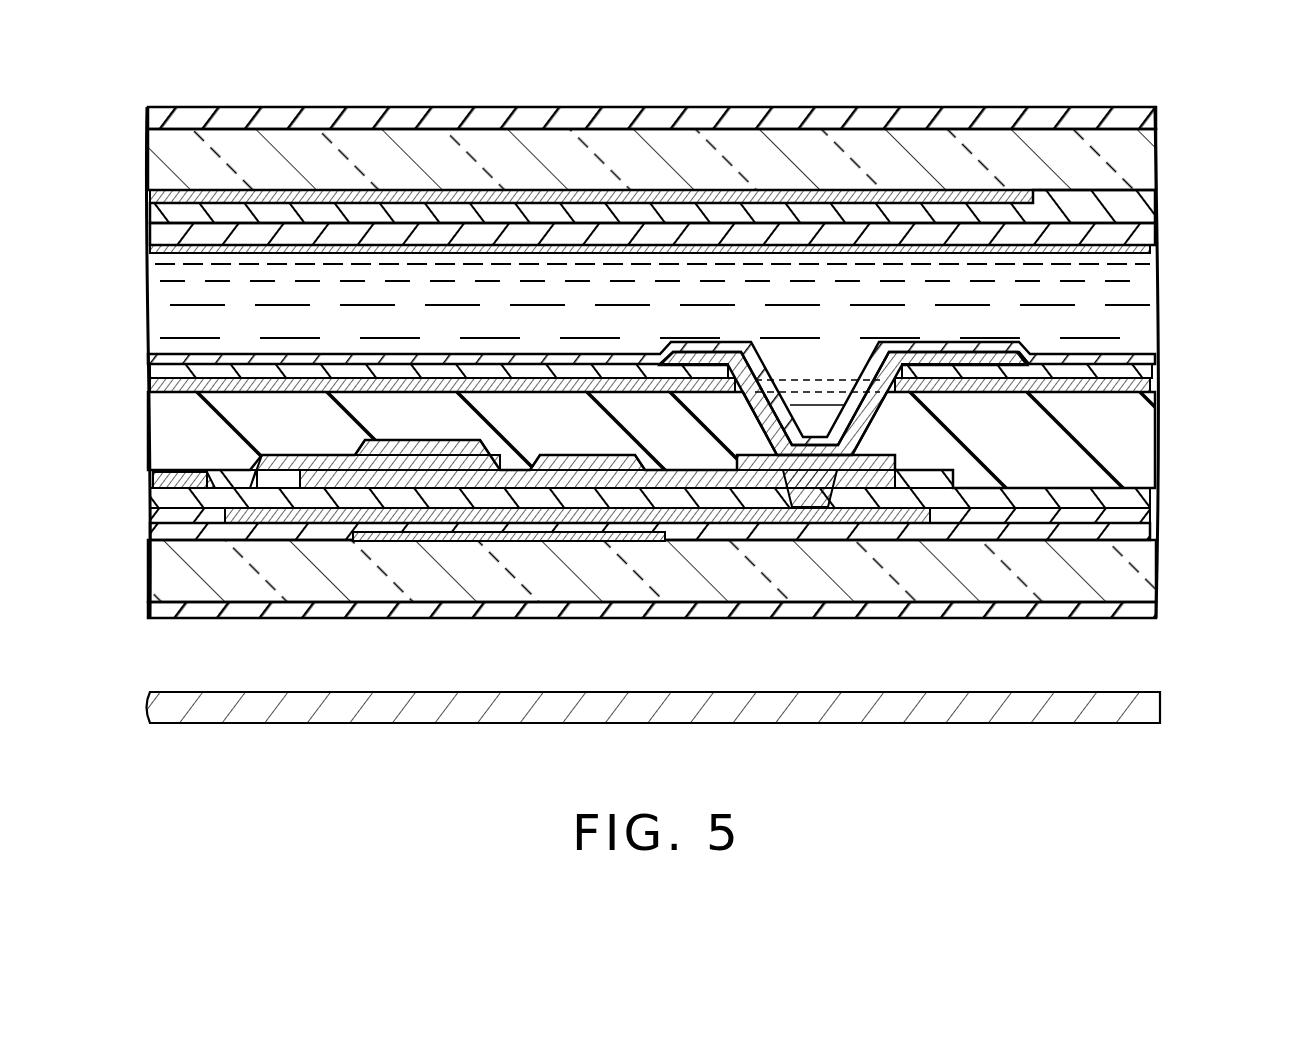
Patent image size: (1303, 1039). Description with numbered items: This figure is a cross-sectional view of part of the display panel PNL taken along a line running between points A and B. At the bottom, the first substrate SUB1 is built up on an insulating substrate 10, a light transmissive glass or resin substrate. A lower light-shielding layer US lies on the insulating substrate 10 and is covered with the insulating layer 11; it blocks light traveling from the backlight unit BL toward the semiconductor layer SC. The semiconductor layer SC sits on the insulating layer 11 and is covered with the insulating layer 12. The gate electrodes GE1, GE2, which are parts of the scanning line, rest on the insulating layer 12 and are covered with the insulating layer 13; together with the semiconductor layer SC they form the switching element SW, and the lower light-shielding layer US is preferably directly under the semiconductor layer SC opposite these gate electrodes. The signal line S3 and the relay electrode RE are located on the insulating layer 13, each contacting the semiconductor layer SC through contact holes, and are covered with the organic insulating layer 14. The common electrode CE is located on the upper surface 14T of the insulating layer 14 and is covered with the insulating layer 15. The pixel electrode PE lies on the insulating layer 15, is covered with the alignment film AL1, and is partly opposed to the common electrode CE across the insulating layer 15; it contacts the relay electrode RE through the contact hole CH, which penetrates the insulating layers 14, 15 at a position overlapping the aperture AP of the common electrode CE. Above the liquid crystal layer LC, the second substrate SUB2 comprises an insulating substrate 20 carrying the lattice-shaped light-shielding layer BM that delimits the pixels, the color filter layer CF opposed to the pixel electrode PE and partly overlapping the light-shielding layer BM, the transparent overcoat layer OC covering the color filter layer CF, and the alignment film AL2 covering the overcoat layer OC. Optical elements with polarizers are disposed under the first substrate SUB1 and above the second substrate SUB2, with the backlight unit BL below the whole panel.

The insulating substrate 20 is at (150, 146).
The light-shielding layer BM is at (150, 193).
The color filter layer CF is at (170, 214).
The overcoat layer OC is at (165, 239).
The alignment film AL2 is at (160, 254).
The liquid crystal layer LC is at (1135, 318).
The second substrate SUB2 is at (1170, 212).
The display panel PNL is at (1195, 158).
The insulating substrate 10 is at (160, 572).
The insulating layer 11 is at (165, 530).
The lower light-shielding layer US is at (395, 541).
The insulating layer 12 is at (160, 507).
The insulating layer 13 is at (160, 480).
The signal line S3 is at (236, 523).
The semiconductor layer SC is at (325, 523).
The gate electrode GE1 is at (432, 472).
The gate electrode GE2 is at (597, 482).
The relay electrode RE is at (865, 470).
The insulating layer 14 is at (165, 424).
The first substrate SUB1 is at (1170, 445).
The common electrode CE is at (170, 394).
The upper surface 14T is at (1120, 373).
The insulating layer 15 is at (165, 371).
The pixel electrode PE is at (970, 363).
The alignment film AL1 is at (160, 357).
The contact hole CH is at (800, 378).
The aperture AP is at (842, 362).
The switching element SW is at (497, 575).
The backlight unit BL is at (1148, 712).
The line end A is at (148, 642).
The line end B is at (1151, 642).